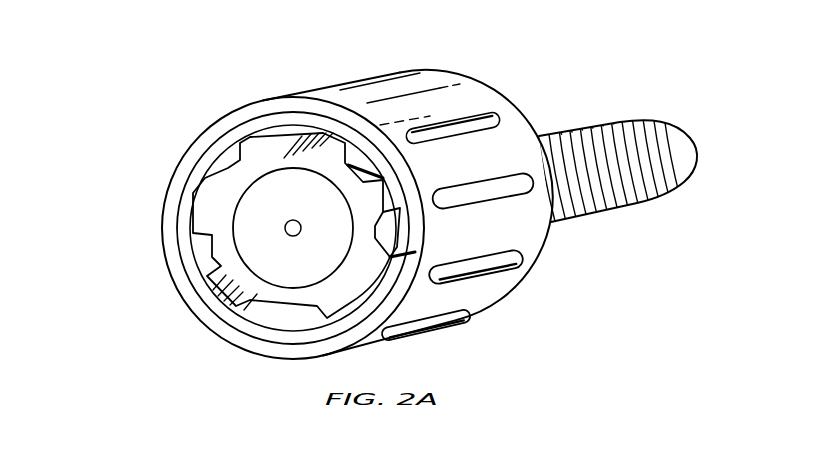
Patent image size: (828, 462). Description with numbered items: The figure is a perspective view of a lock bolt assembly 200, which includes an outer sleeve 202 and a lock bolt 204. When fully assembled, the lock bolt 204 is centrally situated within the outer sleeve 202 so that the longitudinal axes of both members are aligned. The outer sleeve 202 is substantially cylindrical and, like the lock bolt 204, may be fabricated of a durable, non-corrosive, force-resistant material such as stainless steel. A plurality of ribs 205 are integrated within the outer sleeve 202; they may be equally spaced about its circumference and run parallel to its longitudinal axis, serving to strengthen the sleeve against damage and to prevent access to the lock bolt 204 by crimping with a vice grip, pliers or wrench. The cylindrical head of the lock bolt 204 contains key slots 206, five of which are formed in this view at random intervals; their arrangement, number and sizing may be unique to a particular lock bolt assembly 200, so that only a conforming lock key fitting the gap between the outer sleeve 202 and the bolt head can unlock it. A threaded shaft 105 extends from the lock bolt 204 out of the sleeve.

The lock bolt assembly 200 is at (380, 188).
The outer sleeve 202 is at (357, 205).
The lock bolt 204 is at (260, 225).
The ribs 205 is at (478, 198).
The key slots 206 is at (230, 167).
The threaded shaft 105 is at (473, 267).